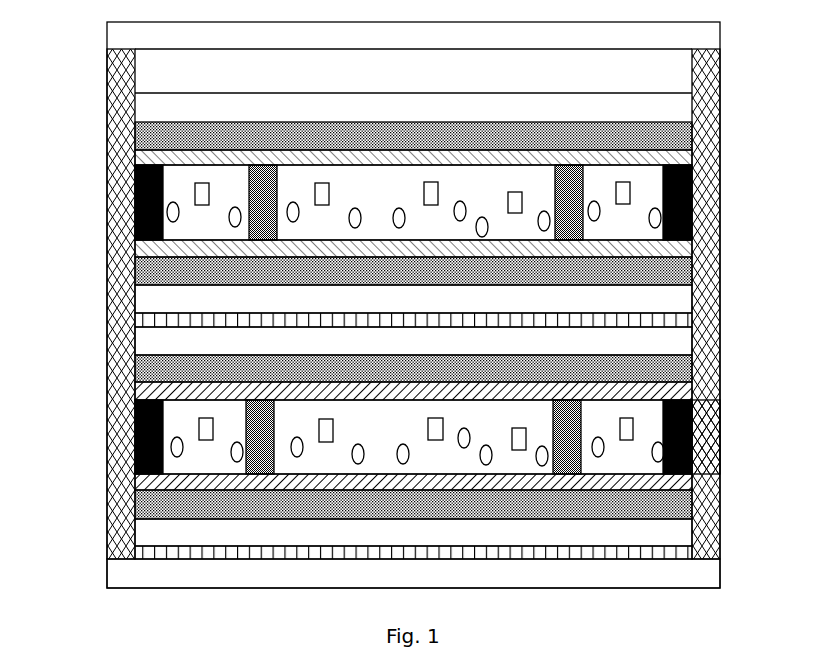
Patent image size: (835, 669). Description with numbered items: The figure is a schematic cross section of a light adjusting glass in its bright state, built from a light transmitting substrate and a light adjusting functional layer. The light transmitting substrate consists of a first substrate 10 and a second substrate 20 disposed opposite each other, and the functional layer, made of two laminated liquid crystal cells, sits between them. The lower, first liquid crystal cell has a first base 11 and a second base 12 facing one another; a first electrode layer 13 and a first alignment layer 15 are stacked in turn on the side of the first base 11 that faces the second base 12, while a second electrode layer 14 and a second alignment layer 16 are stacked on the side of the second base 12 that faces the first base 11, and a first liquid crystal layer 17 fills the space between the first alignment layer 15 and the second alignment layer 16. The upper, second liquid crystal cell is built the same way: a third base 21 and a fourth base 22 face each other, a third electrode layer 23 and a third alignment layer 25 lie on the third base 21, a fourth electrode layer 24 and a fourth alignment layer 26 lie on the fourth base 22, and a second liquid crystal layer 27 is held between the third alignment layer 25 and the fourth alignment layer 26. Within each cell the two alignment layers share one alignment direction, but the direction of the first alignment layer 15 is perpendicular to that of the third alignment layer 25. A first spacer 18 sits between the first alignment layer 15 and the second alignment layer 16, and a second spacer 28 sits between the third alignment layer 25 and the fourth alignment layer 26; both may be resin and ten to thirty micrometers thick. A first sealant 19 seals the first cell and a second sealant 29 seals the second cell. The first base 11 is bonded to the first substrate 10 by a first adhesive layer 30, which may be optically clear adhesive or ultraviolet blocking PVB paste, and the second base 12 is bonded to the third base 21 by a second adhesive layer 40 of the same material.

The first substrate 10 is at (163, 577).
The first base 11 is at (163, 538).
The second base 12 is at (663, 338).
The first electrode layer 13 is at (163, 512).
The second electrode layer 14 is at (663, 360).
The first alignment layer 15 is at (163, 483).
The second alignment layer 16 is at (663, 387).
The first liquid crystal layer 17 is at (647, 448).
The first spacer 18 is at (246, 433).
The first sealant 19 is at (692, 416).
The second substrate 20 is at (663, 27).
The third base 21 is at (163, 304).
The fourth base 22 is at (663, 106).
The third electrode layer 23 is at (163, 276).
The fourth electrode layer 24 is at (663, 133).
The third alignment layer 25 is at (163, 249).
The fourth alignment layer 26 is at (663, 161).
The second liquid crystal layer 27 is at (647, 226).
The second spacer 28 is at (246, 205).
The second sealant 29 is at (692, 193).
The first adhesive layer 30 is at (663, 555).
The second adhesive layer 40 is at (663, 316).